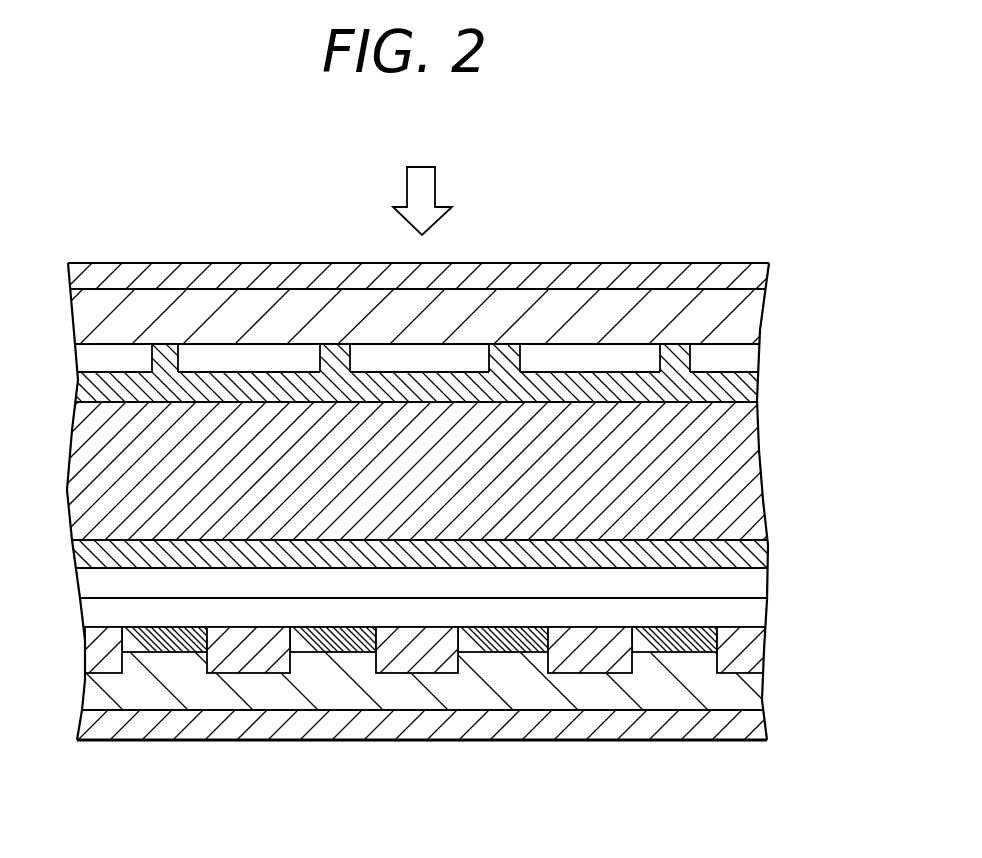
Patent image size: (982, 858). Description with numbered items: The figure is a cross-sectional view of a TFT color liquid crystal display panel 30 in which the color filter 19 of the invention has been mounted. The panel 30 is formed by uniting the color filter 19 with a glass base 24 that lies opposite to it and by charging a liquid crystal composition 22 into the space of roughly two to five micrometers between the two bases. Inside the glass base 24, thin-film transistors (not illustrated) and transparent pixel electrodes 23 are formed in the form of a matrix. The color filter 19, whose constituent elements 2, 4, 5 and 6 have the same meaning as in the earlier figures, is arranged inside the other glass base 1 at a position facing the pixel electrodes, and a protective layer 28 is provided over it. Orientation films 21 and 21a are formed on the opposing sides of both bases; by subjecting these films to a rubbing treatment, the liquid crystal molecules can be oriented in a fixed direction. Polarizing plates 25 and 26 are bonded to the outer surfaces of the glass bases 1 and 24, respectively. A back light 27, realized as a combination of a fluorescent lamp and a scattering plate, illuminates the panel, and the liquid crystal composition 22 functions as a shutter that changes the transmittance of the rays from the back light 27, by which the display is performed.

The glass base 1 is at (417, 681).
The electrode 2 is at (164, 639).
The electrode 4 is at (234, 650).
The electrode 5 is at (403, 650).
The electrode 6 is at (575, 650).
The color filter 19 is at (866, 617).
The orientation film 21 is at (417, 373).
The orientation film 21a is at (417, 554).
The liquid crystal composition 22 is at (417, 471).
The transparent pixel electrodes 23 is at (421, 358).
The glass base 24 is at (417, 316).
The polarizing plate 25 is at (417, 725).
The polarizing plate 26 is at (417, 276).
The back light 27 is at (422, 179).
The protective layer 28 is at (417, 639).
The TFT color liquid crystal display panel 30 is at (757, 216).